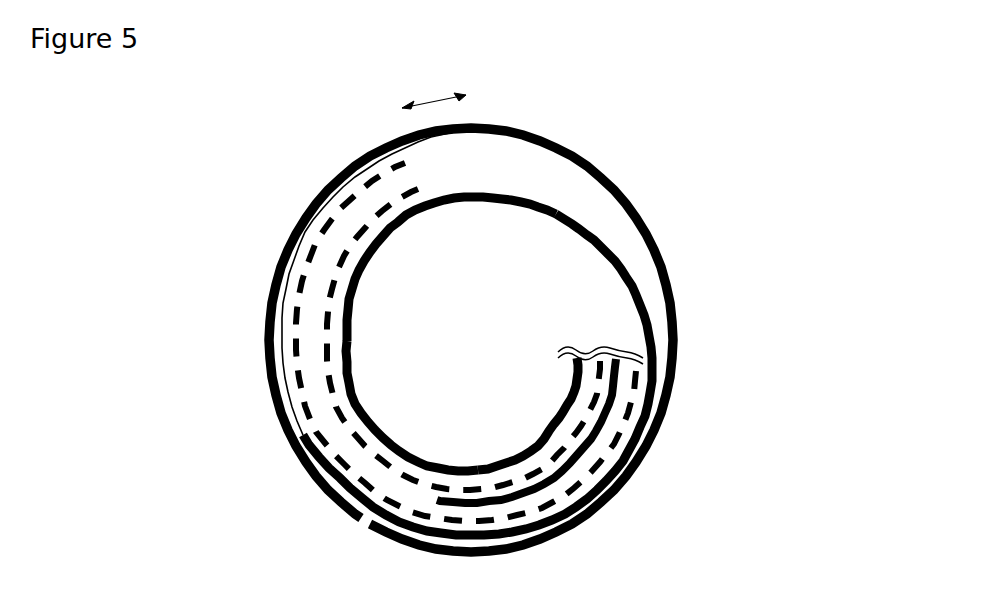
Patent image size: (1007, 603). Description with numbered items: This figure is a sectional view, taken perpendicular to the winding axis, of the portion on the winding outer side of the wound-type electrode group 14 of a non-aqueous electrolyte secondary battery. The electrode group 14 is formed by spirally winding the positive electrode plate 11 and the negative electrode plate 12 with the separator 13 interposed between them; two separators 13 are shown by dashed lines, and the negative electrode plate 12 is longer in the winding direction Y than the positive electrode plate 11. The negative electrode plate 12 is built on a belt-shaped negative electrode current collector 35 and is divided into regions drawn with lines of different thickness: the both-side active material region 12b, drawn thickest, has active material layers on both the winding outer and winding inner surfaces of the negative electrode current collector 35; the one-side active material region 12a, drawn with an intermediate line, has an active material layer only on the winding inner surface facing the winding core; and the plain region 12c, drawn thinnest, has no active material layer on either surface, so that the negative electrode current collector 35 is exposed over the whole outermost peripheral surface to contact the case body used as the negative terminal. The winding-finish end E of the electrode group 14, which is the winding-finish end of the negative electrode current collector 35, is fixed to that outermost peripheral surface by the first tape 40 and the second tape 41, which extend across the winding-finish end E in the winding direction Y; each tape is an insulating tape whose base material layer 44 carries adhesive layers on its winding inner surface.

The positive electrode plate 11 is at (623, 393).
The negative electrode plate 12 is at (328, 192).
The one-side active material region 12a is at (425, 210).
The both-side active material region 12b is at (395, 443).
The plain region 12c is at (308, 227).
The separator 13 is at (580, 430).
The electrode group 14 is at (620, 252).
The negative electrode current collector 35 is at (364, 175).
The first tape 40 is at (484, 334).
The second tape 41 is at (582, 143).
The base material layer 44 is at (674, 283).
The winding-finish end E is at (490, 125).
The winding direction Y is at (432, 97).